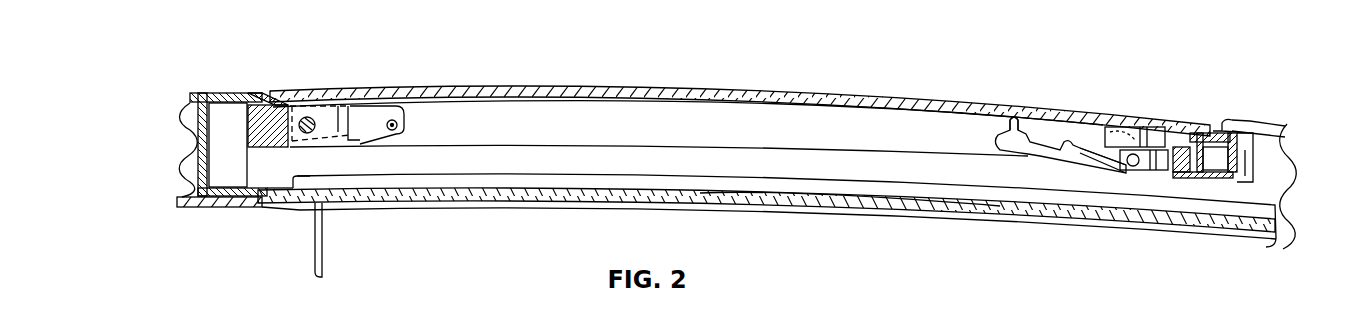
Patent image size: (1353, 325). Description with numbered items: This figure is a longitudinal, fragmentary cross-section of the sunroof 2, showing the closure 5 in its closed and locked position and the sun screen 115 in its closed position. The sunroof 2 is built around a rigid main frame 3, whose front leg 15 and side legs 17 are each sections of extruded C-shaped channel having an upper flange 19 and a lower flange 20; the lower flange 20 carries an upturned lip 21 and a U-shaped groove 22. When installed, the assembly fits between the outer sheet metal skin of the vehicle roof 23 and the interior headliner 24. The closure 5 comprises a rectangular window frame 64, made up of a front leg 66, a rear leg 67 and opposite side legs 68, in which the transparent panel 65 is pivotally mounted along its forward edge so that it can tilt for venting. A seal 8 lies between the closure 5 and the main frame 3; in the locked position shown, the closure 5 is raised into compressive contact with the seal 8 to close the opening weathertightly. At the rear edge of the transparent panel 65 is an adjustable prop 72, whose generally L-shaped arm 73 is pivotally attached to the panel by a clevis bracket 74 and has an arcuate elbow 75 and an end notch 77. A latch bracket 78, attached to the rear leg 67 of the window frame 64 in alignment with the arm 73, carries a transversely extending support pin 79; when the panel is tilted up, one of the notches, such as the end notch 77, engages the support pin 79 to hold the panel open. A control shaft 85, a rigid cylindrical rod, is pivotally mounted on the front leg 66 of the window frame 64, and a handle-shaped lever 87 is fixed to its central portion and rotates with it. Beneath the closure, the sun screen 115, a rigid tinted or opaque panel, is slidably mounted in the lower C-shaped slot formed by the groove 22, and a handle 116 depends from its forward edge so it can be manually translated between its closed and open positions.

The sunroof 2 is at (1263, 107).
The main frame 3 is at (227, 91).
The retractable closure 5 is at (551, 89).
The seal 8 is at (267, 93).
The front leg 15 is at (192, 143).
The side legs 17 is at (443, 163).
The upper flange 19 is at (192, 118).
The lower flange 20 is at (192, 173).
The upturned lip 21 is at (301, 178).
The U-shaped groove 22 is at (262, 206).
The sheet metal skin of the vehicle roof 23 is at (213, 91).
The interior headliner 24 is at (185, 204).
The window frame 64 is at (288, 150).
The transparent panel 65 is at (643, 90).
The front leg 66 is at (238, 143).
The rear leg 67 is at (1208, 187).
The side legs 68 is at (525, 134).
The adjustable prop 72 is at (1090, 159).
The arm 73 is at (1030, 148).
The clevis bracket 74 is at (1113, 125).
The arcuate elbow 75 is at (1153, 177).
The end notch 77 is at (1017, 122).
The latch bracket 78 is at (1186, 125).
The support pin 79 is at (1127, 167).
The control shaft 85 is at (310, 114).
The lever 87 is at (355, 145).
The sun screen 115 is at (780, 203).
The handle 116 is at (322, 237).